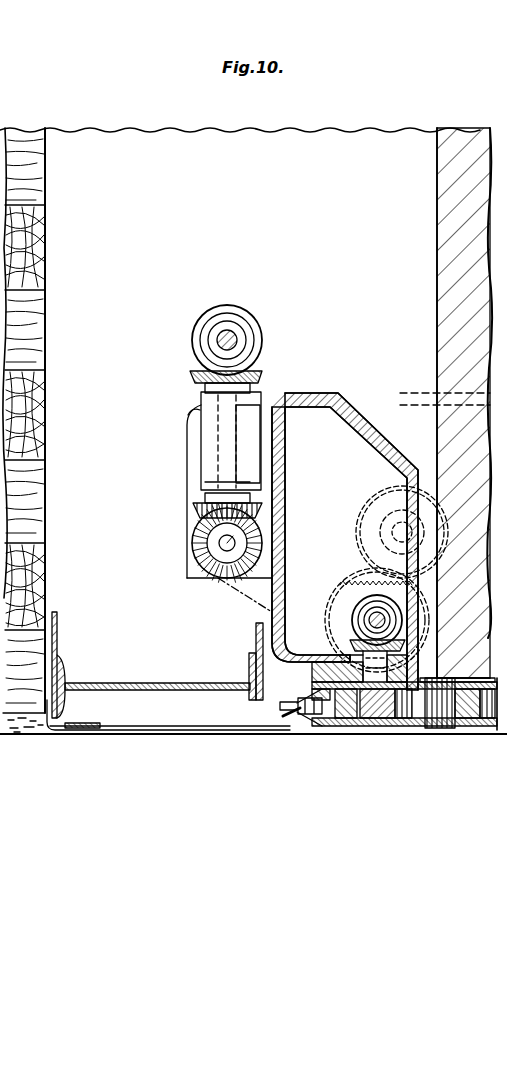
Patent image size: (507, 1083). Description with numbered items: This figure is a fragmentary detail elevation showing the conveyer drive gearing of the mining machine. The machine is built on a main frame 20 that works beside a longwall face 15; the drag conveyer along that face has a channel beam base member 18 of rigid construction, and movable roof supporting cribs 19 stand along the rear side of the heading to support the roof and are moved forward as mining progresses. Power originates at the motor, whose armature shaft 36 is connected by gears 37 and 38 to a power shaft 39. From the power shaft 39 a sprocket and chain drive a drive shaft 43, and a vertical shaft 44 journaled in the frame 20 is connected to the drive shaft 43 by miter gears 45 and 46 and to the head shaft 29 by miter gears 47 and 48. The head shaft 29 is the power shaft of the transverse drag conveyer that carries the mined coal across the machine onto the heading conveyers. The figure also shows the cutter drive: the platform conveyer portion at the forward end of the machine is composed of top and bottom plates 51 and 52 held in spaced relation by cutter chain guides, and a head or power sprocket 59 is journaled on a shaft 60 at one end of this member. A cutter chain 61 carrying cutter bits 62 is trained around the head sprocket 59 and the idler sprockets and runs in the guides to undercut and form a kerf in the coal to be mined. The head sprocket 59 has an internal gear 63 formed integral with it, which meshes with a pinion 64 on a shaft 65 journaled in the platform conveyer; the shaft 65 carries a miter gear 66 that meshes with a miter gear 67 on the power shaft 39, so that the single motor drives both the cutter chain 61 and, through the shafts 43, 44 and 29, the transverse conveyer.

The longwall face 15 is at (436, 243).
The channel beam base member 18 is at (138, 683).
The movable roof supporting crib 19 is at (35, 262).
The main frame 20 is at (340, 397).
The head shaft 29 is at (221, 595).
The armature shaft 36 is at (400, 530).
The gear 37 is at (390, 492).
The gear 38 is at (362, 568).
The power shaft 39 is at (360, 605).
The drive shaft 43 is at (222, 336).
The vertical shaft 44 is at (222, 458).
The miter gear 45 is at (250, 322).
The miter gear 46 is at (192, 377).
The miter gear 47 is at (196, 512).
The miter gear 48 is at (212, 548).
The top plate 51 is at (290, 673).
The bottom plate 52 is at (393, 727).
The head sprocket 59 is at (304, 724).
The shaft 60 is at (440, 720).
The cutter chain 61 is at (296, 707).
The cutter bit 62 is at (290, 716).
The internal gear 63 is at (335, 722).
The pinion 64 is at (362, 720).
The shaft 65 is at (292, 645).
The miter gear 66 is at (352, 645).
The miter gear 67 is at (356, 618).